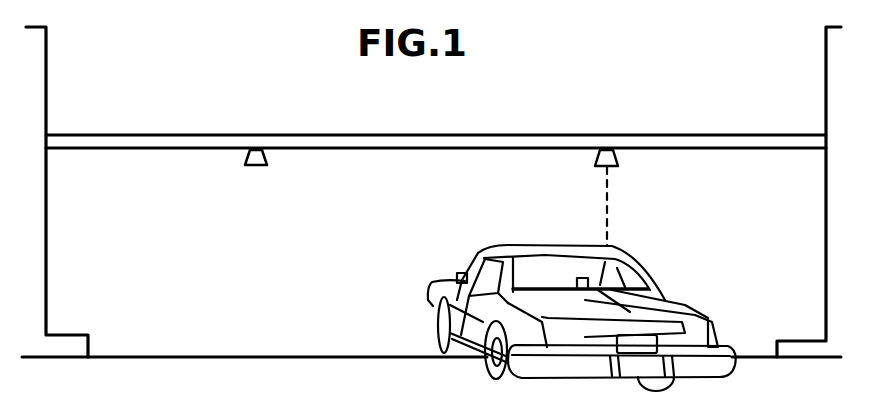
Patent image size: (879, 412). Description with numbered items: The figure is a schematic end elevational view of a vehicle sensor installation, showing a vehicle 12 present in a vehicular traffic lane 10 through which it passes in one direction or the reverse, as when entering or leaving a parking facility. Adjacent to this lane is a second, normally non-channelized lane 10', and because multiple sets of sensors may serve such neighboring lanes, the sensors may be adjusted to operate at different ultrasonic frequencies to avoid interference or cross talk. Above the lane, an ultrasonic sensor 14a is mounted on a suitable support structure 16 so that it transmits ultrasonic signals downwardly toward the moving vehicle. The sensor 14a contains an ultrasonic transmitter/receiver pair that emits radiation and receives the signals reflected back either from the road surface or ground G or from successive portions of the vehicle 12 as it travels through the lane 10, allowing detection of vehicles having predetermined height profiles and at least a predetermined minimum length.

The vehicular traffic lane 10 is at (792, 192).
The adjacent traffic lane 10' is at (105, 192).
The vehicle 12 is at (686, 260).
The ultrasonic sensor 14a is at (598, 154).
The support structure 16 is at (520, 140).
The ground G is at (331, 356).